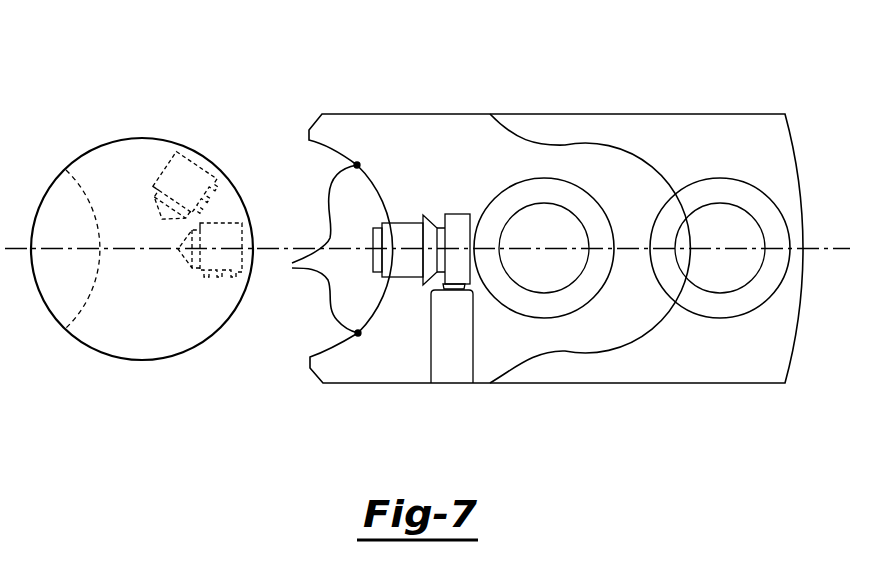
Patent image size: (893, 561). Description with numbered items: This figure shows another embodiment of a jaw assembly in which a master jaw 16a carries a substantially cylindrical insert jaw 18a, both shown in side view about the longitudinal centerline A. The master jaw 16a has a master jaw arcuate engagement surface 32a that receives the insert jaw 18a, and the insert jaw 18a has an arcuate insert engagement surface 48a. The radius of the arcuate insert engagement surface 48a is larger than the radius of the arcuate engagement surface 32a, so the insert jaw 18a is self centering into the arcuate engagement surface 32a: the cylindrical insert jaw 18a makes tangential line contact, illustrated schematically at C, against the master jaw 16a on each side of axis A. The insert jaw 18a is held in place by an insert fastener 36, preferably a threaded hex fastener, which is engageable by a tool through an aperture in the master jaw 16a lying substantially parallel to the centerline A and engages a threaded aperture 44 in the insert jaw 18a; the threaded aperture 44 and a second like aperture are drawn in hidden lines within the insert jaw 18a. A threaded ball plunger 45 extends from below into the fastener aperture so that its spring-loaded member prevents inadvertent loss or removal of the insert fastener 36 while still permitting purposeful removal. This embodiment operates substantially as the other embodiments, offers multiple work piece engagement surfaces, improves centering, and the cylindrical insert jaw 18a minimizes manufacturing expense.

The master jaw 16a is at (684, 95).
The insert jaw 18a is at (151, 108).
The master jaw arcuate engagement surface 32a is at (330, 348).
The insert fastener 36 is at (460, 213).
The threaded aperture 44 is at (218, 282).
The threaded ball plunger 45 is at (431, 352).
The arcuate insert engagement surface 48a is at (240, 196).
The longitudinal centerline A is at (835, 250).
The tangential line contact C is at (281, 266).